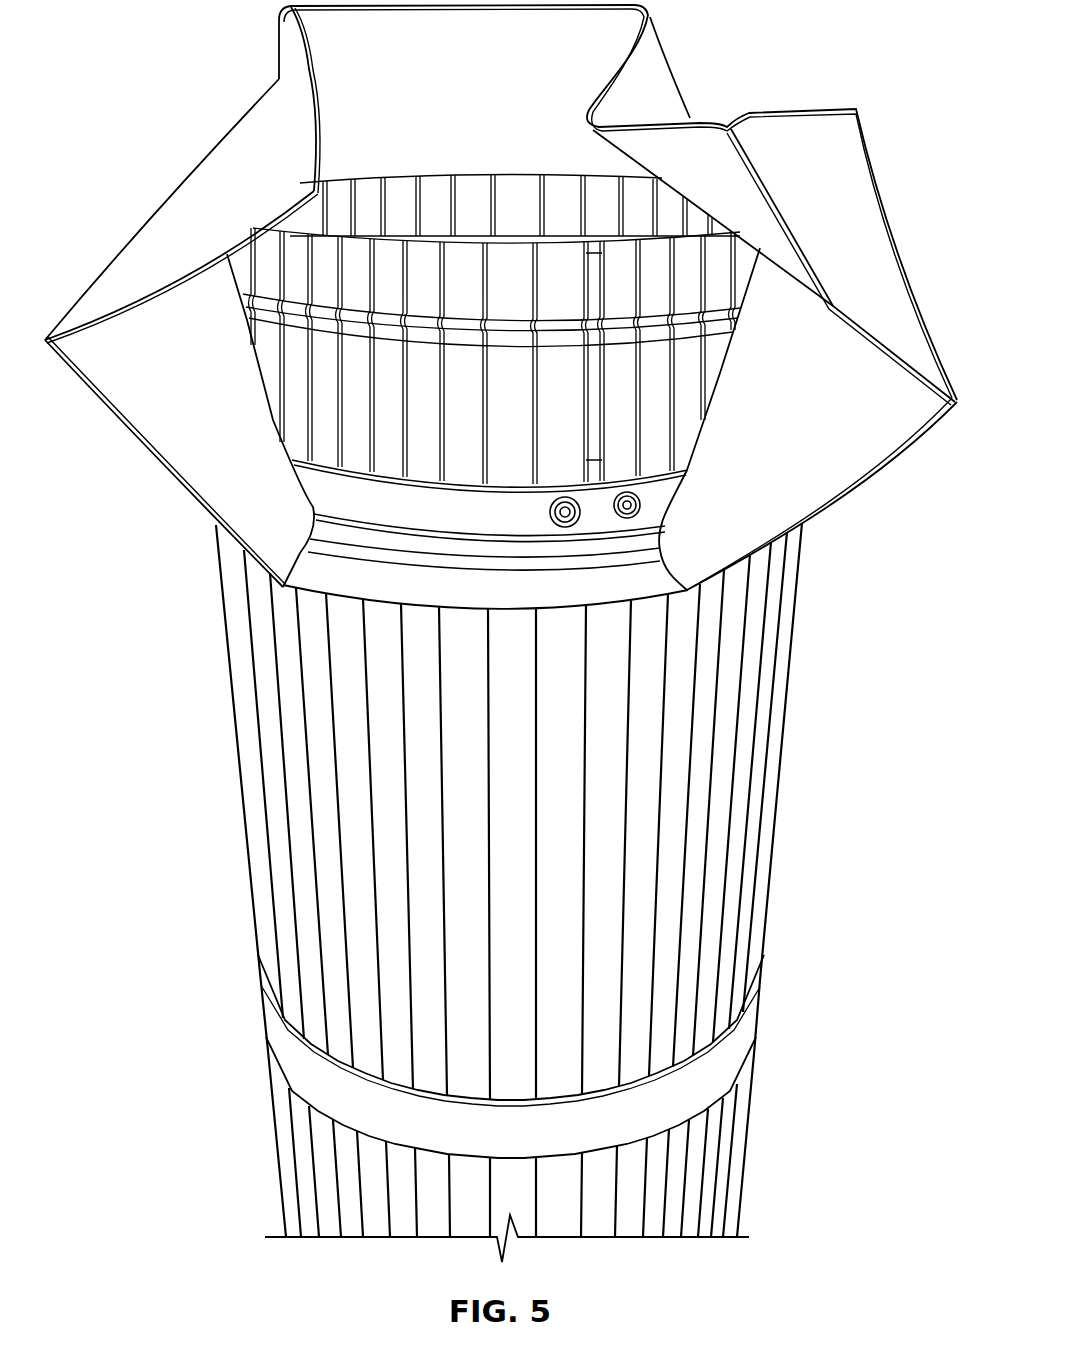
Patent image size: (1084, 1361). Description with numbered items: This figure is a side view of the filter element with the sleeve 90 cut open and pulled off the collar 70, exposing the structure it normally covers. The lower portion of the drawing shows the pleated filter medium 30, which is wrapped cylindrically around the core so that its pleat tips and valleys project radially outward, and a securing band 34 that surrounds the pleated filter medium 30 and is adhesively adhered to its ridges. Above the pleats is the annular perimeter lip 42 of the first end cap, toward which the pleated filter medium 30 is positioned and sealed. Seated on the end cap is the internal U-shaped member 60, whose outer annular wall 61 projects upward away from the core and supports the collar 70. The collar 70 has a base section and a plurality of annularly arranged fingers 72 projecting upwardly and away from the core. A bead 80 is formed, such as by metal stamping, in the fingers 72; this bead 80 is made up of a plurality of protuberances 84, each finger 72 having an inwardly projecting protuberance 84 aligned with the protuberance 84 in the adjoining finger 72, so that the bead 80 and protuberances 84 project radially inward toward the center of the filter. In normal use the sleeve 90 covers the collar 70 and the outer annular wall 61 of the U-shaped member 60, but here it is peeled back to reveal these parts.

The pleated filter medium 30 is at (333, 870).
The securing band 34 is at (493, 1148).
The annular perimeter lip 42 is at (345, 573).
The U-shaped member 60 is at (657, 493).
The outer annular wall 61 is at (660, 520).
The collar 70 is at (687, 367).
The fingers 72 is at (695, 277).
The bead 80 is at (460, 350).
The protuberances 84 is at (513, 337).
The sleeve 90 is at (452, 101).